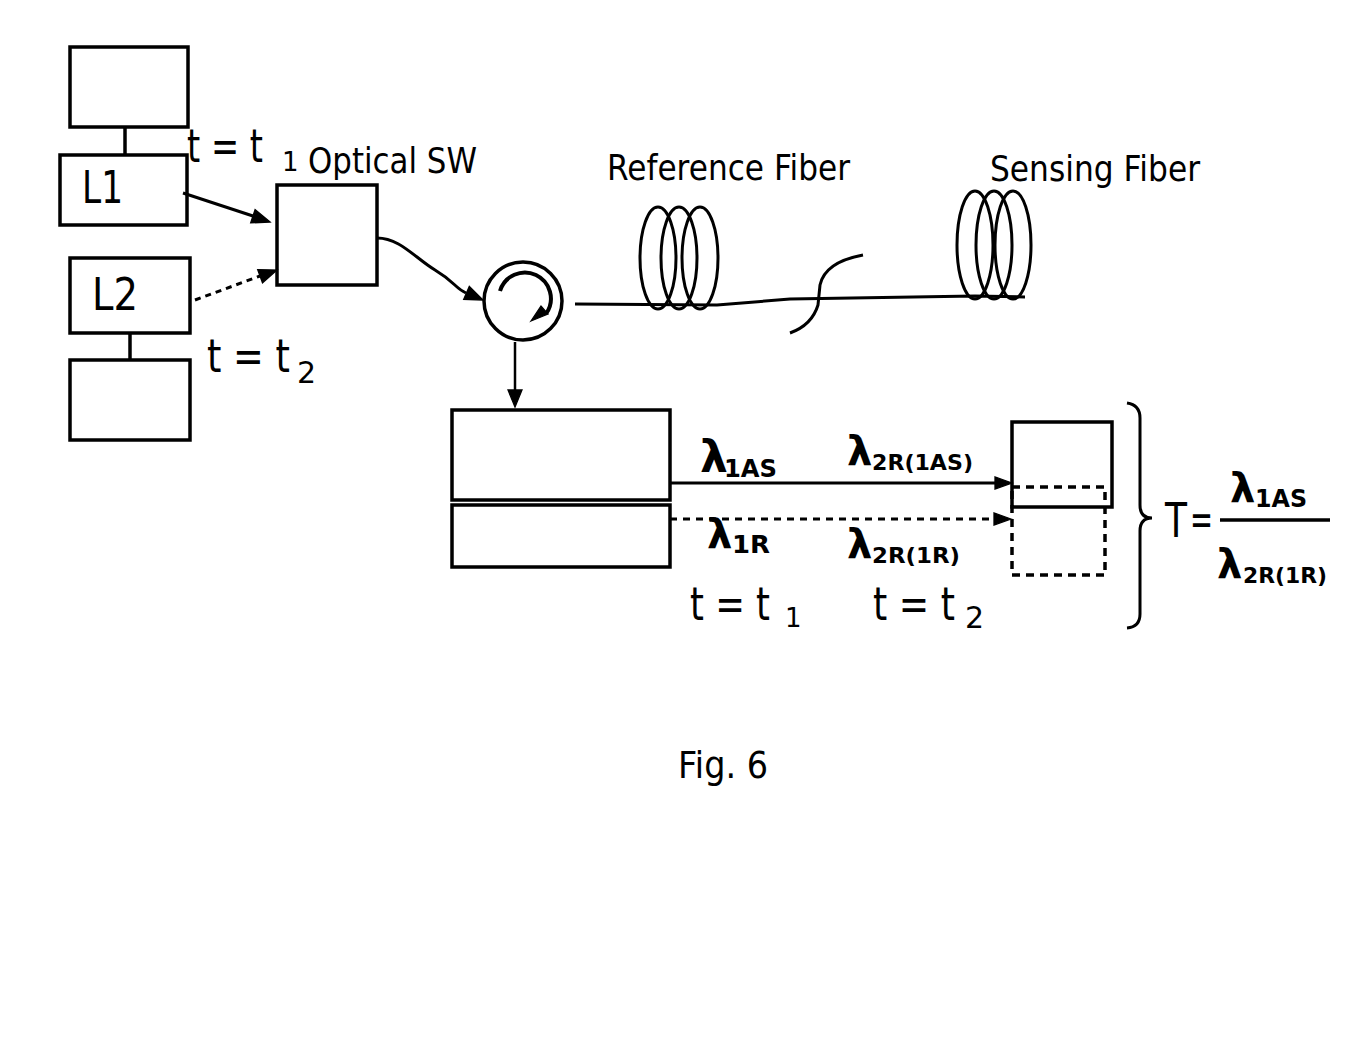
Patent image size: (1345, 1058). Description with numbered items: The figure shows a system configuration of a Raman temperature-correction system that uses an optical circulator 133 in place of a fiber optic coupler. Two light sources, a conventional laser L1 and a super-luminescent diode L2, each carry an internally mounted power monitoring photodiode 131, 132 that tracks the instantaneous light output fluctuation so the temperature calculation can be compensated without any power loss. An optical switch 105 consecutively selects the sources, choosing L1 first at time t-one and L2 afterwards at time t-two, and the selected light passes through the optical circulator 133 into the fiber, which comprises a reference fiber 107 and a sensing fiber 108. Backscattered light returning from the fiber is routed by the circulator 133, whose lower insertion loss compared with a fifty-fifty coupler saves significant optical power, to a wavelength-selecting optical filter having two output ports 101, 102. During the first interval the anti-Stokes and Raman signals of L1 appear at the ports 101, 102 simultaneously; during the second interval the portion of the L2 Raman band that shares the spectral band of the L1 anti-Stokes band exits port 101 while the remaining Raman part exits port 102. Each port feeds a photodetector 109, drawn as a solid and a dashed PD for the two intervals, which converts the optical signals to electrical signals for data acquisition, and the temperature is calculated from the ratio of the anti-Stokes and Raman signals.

The power monitoring photodiode 131 is at (170, 87).
The power monitoring photodiode 132 is at (133, 425).
The optical switch 105 is at (327, 235).
The optical circulator 133 is at (523, 278).
The reference fiber 107 is at (717, 258).
The sensing fiber 108 is at (1037, 245).
The output port of optical filter 101 is at (561, 455).
The output port of optical filter 102 is at (561, 536).
The photodetector 109 is at (1062, 528).